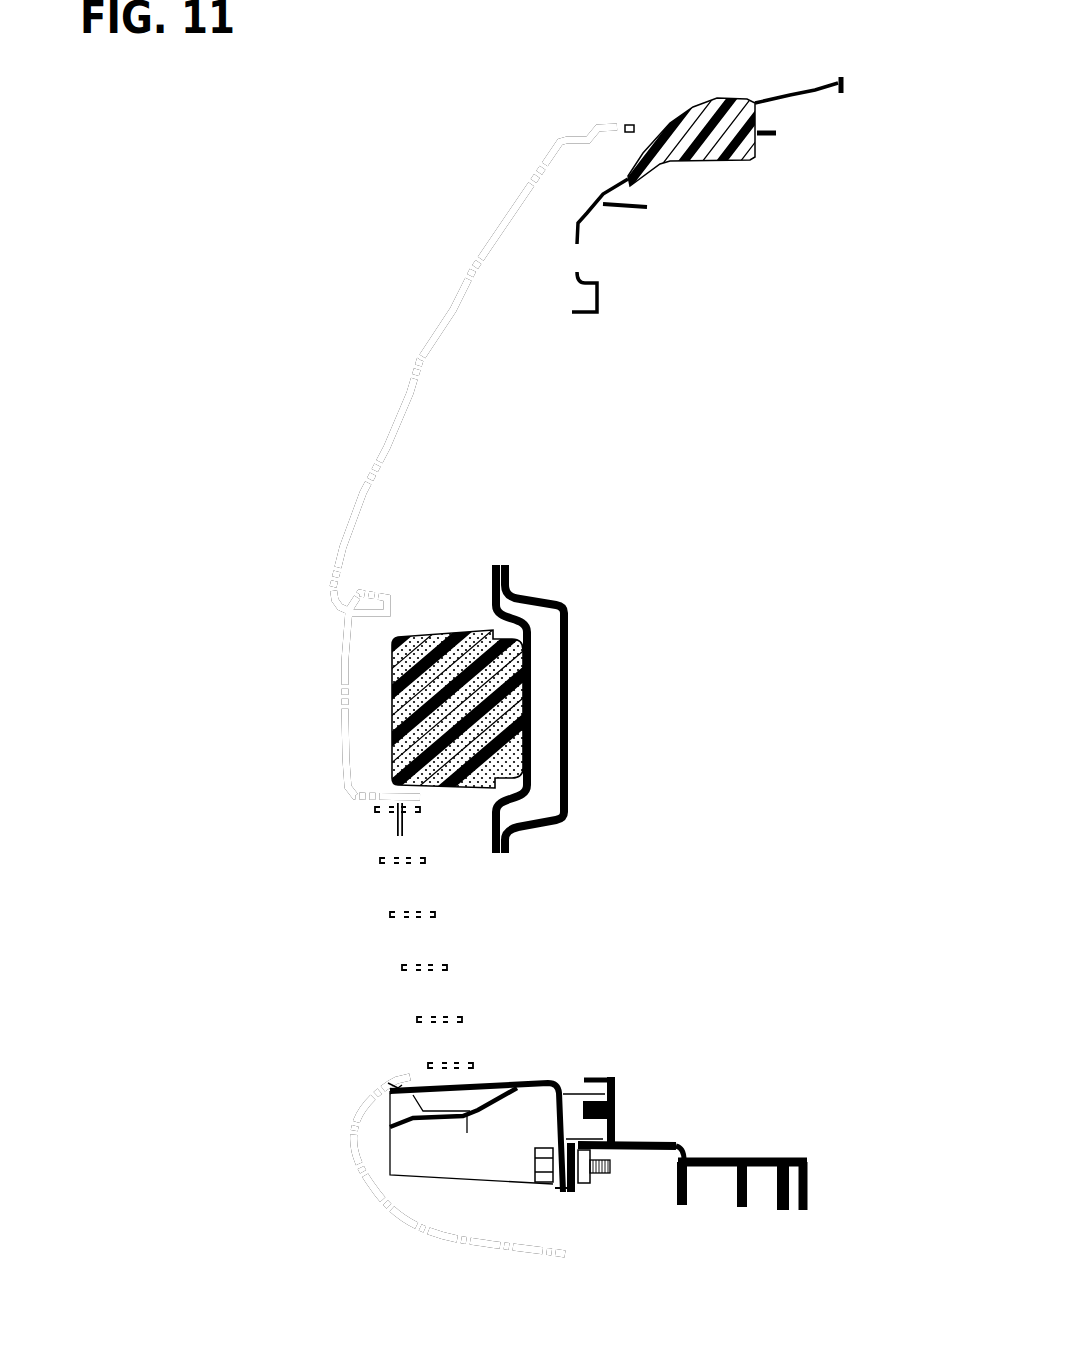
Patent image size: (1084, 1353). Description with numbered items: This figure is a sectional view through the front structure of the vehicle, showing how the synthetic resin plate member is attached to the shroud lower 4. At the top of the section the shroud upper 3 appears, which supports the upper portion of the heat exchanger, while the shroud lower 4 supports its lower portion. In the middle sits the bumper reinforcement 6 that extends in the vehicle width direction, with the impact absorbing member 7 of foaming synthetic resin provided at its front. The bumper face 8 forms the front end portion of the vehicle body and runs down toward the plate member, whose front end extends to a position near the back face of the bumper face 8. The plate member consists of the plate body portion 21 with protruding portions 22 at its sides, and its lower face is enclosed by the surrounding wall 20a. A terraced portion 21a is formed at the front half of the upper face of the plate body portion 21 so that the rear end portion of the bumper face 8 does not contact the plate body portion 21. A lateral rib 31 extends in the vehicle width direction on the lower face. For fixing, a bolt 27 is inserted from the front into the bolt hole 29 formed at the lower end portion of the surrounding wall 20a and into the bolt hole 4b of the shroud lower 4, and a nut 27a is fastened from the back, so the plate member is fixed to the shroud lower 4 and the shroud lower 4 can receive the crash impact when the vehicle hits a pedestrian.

The shroud upper 3 is at (793, 93).
The shroud lower 4 is at (753, 1158).
The bolt hole 4b is at (582, 1183).
The bumper reinforcement 6 is at (536, 828).
The impact absorbing member 7 is at (438, 636).
The bumper face 8 is at (502, 221).
The surrounding wall 20a is at (613, 1093).
The plate body portion 21 is at (543, 1083).
The terraced portion 21a is at (396, 1088).
The protruding portion 22 is at (480, 1088).
The bolt 27 is at (537, 1164).
The nut 27a is at (594, 1173).
The bolt hole 29 is at (563, 1192).
The lateral rib 31 is at (467, 1133).